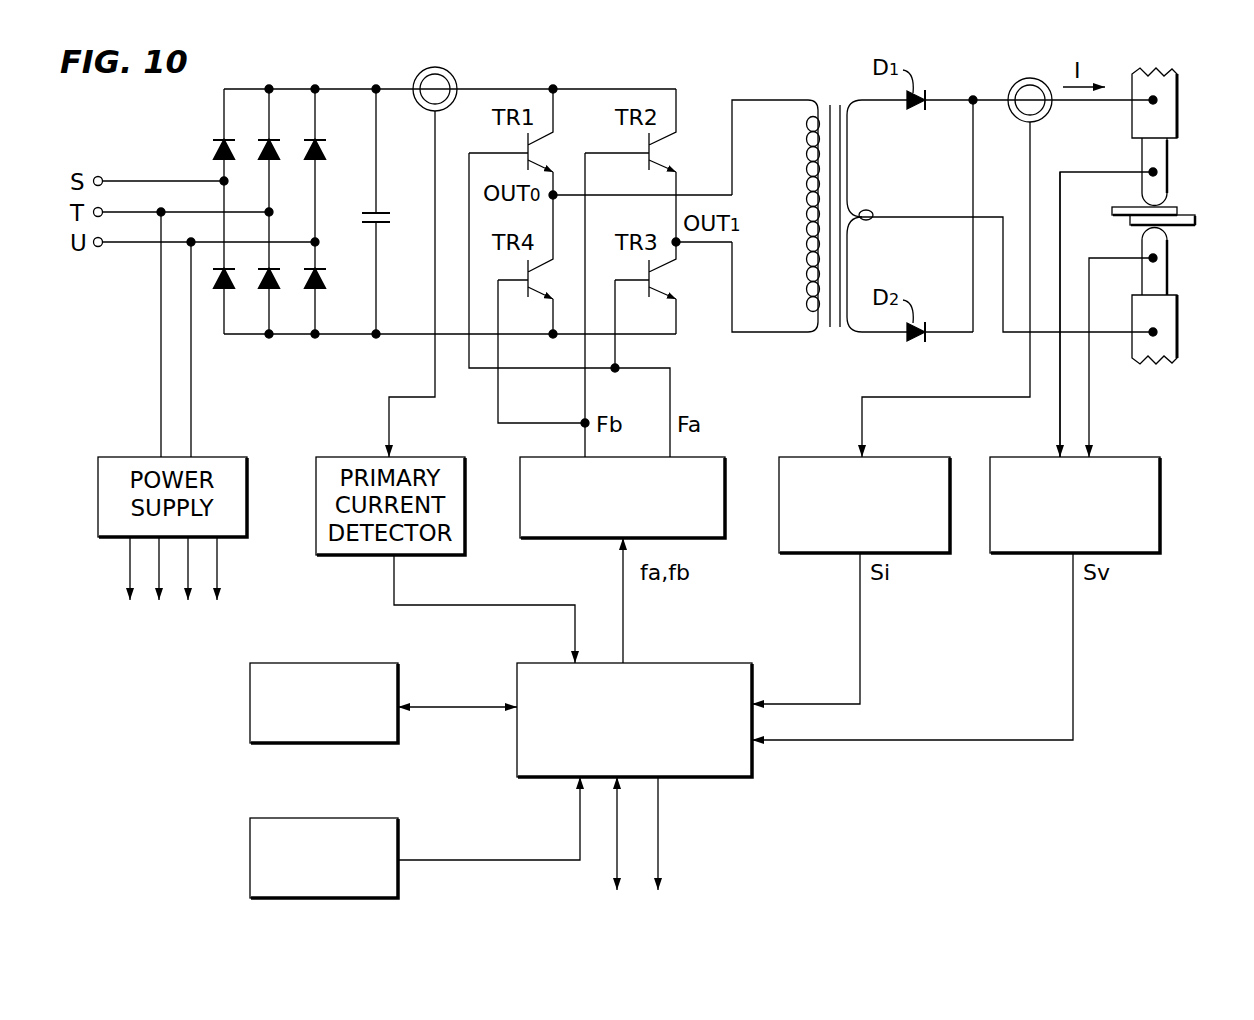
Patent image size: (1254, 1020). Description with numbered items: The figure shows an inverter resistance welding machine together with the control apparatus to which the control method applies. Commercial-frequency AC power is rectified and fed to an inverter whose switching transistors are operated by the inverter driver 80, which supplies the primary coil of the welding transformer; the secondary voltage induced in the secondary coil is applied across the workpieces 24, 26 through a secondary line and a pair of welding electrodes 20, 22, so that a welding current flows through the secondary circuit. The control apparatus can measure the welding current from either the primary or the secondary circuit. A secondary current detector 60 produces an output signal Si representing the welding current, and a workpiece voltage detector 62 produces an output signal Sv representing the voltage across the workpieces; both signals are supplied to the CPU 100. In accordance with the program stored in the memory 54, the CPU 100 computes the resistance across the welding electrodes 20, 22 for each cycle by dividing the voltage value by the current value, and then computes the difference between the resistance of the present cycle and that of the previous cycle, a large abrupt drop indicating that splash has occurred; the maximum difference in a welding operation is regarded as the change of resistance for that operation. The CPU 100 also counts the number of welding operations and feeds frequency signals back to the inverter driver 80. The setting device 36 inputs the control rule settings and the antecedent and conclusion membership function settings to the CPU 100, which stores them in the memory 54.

The welding electrode 20 is at (1160, 158).
The welding electrode 22 is at (1160, 265).
The workpiece 24 is at (1177, 207).
The workpiece 26 is at (1185, 227).
The setting device 36 is at (352, 818).
The memory 54 is at (352, 663).
The secondary current detector 60 is at (887, 457).
The workpiece voltage detector 62 is at (1100, 457).
The inverter driver 80 is at (720, 457).
The CPU 100 is at (708, 663).